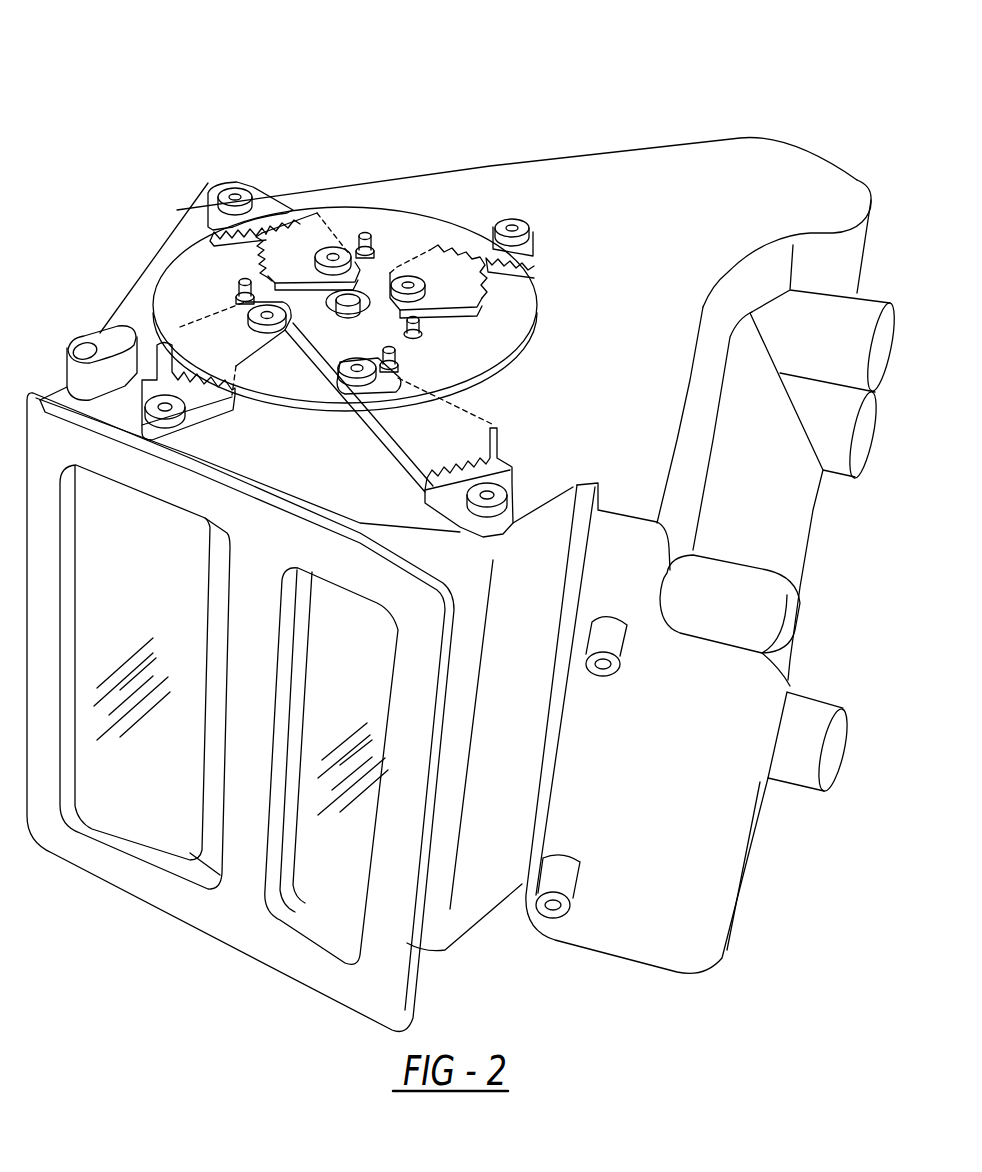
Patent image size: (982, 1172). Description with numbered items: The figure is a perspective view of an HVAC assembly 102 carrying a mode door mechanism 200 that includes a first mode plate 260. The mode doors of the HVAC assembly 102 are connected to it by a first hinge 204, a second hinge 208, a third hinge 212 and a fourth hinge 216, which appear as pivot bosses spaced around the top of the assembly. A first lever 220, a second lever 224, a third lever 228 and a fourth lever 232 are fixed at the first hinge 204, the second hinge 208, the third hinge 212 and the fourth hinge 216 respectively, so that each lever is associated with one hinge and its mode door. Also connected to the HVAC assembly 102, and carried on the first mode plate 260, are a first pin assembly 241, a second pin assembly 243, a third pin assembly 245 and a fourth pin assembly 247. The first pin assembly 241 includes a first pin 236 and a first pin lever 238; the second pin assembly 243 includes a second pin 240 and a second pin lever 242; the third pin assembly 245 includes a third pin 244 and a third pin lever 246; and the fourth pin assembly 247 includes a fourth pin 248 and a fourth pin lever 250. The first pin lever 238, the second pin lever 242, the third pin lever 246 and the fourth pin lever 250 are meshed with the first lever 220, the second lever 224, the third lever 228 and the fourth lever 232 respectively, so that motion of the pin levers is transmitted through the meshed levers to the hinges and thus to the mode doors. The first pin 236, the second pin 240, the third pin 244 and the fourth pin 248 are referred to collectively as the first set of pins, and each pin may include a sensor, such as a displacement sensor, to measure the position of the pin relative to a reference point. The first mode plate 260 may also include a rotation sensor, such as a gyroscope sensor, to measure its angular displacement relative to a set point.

The HVAC assembly 102 is at (135, 122).
The mode door mechanism 200 is at (299, 244).
The first hinge 204 is at (157, 407).
The second hinge 208 is at (497, 492).
The third hinge 212 is at (522, 220).
The fourth hinge 216 is at (222, 193).
The first lever 220 is at (213, 423).
The second lever 224 is at (503, 462).
The third lever 228 is at (485, 240).
The fourth lever 232 is at (290, 194).
The first pin 236 is at (172, 262).
The first pin lever 238 is at (238, 282).
The second pin 240 is at (405, 346).
The first pin assembly 241 is at (283, 350).
The second pin lever 242 is at (397, 417).
The second pin assembly 243 is at (405, 380).
The third pin 244 is at (485, 320).
The third pin assembly 245 is at (422, 324).
The third pin lever 246 is at (492, 245).
The fourth pin assembly 247 is at (328, 242).
The fourth pin 248 is at (366, 230).
The fourth pin lever 250 is at (292, 232).
The first mode plate 260 is at (396, 225).